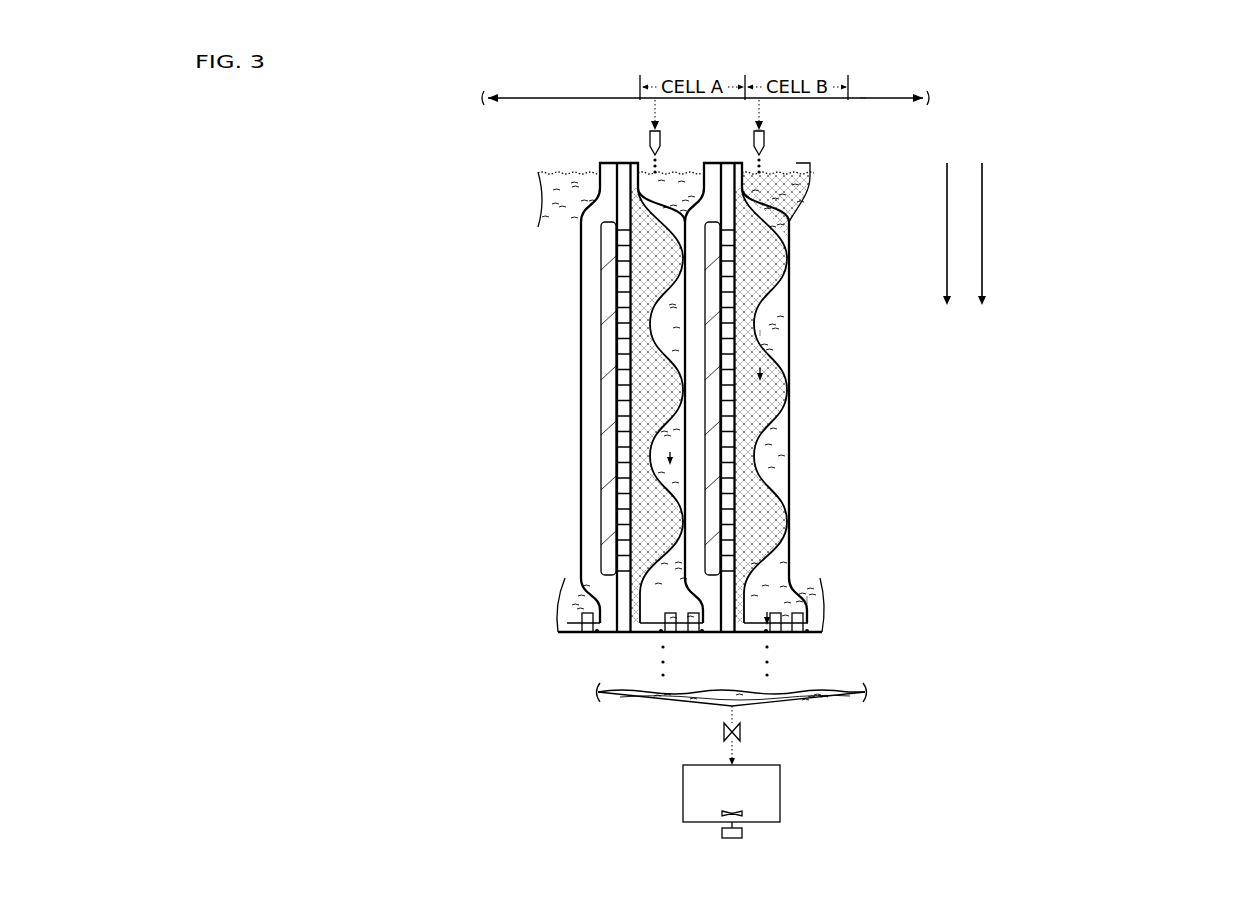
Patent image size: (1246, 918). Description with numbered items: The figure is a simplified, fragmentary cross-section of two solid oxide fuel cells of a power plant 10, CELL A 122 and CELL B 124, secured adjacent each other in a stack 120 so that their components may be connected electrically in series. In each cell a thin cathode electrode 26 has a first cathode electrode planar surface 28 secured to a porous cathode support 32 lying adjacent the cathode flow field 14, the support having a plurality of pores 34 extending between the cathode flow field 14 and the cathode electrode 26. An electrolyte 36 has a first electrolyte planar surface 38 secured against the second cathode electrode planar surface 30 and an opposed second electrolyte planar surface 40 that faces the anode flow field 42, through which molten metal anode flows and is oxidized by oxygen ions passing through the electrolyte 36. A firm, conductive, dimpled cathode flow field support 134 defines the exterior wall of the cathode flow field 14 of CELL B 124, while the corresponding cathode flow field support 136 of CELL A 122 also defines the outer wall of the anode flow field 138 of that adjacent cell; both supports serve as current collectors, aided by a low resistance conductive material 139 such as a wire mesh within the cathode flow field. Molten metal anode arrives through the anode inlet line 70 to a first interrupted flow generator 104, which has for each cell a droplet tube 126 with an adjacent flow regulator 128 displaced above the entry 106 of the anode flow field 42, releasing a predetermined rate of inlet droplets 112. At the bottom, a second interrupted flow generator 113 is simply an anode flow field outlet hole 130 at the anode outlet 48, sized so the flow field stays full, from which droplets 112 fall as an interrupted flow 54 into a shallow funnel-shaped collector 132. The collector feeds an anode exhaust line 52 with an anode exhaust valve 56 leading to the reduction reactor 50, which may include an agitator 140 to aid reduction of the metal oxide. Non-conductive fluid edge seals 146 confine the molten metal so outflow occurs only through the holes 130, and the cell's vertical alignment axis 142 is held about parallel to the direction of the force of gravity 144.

The power plant 10 is at (1166, 117).
The cathode flow field 14 is at (791, 362).
The cathode electrode 26 is at (780, 300).
The first cathode electrode planar surface 28 is at (768, 333).
The second cathode electrode planar surface 30 is at (765, 318).
The porous cathode support 32 is at (792, 230).
The pores 34 is at (790, 258).
The electrolyte 36 is at (790, 480).
The first electrolyte planar surface 38 is at (790, 510).
The second electrolyte planar surface 40 is at (790, 550).
The anode flow field 42 is at (848, 162).
The anode outlet 48 is at (808, 634).
The reduction reactor 50 is at (683, 810).
The anode exhaust line 52 is at (724, 712).
The interrupted flow 54 is at (783, 665).
The anode exhaust valve 56 is at (742, 736).
The anode inlet line 70 is at (870, 100).
The first interrupted flow generator 104 is at (770, 140).
The entry of the anode flow field 106 is at (753, 164).
The inlet droplets 112 is at (793, 222).
The second interrupted flow generator 113 is at (765, 635).
The stack 120 is at (490, 201).
The CELL A 122 is at (692, 147).
The CELL B 124 is at (771, 132).
The droplet tube 126 is at (648, 150).
The flow regulator 128 is at (649, 134).
The anode flow field outlet hole 130 is at (808, 598).
The shallow funnel-shaped collector 132 is at (866, 690).
The cathode flow field support 134 is at (792, 456).
The cathode flow field support 136 is at (617, 408).
The anode flow field 138 is at (650, 447).
The low resistance conductive material 139 is at (792, 470).
The agitator 140 is at (745, 833).
The vertical alignment axis 142 is at (945, 248).
The direction of the force of gravity 144 is at (984, 248).
The non-conductive fluid edge seals 146 is at (803, 618).